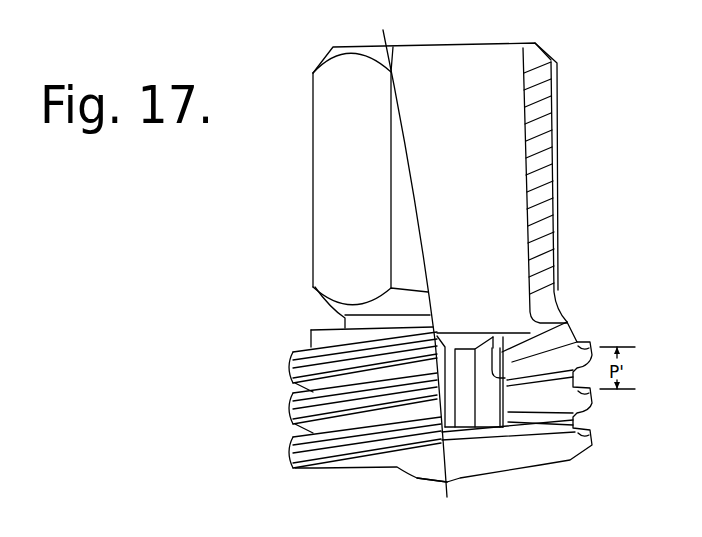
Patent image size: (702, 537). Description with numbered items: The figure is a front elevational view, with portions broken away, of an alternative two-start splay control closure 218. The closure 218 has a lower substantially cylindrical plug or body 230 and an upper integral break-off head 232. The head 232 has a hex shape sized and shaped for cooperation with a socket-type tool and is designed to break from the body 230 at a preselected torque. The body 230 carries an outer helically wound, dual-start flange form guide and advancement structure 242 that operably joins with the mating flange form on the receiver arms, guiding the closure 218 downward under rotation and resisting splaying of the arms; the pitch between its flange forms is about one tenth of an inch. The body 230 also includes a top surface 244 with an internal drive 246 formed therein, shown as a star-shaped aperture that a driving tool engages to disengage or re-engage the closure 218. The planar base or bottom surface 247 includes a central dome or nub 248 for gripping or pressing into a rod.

The two-start closure 218 is at (246, 357).
The body 230 is at (308, 333).
The break-off head 232 is at (312, 175).
The guide and advancement structure 242 is at (289, 452).
The top surface 244 is at (550, 322).
The internal drive 246 is at (527, 365).
The bottom surface 247 is at (541, 466).
The nub 248 is at (450, 483).